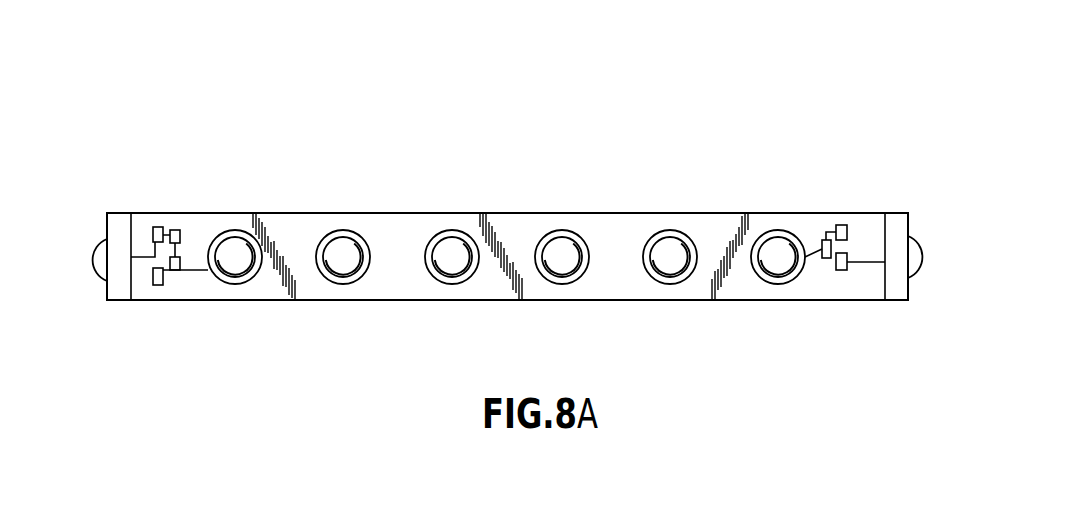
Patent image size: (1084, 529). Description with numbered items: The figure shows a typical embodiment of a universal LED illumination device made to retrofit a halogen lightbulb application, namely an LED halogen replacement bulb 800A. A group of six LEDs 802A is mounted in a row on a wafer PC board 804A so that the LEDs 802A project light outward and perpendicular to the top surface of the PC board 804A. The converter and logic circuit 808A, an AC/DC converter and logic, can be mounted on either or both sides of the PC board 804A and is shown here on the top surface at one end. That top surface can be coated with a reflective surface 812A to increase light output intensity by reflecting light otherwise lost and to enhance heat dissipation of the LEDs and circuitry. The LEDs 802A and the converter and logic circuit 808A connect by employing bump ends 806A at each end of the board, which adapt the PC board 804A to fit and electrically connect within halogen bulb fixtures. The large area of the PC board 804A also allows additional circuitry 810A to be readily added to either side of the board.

The LED halogen replacement bulb 800A is at (498, 210).
The LEDs 802A is at (425, 262).
The PC board 804A is at (468, 213).
The bump ends 806A is at (918, 235).
The converter and logic circuit 808A is at (163, 277).
The additional circuitry 810A is at (826, 258).
The reflective surface 812A is at (630, 221).